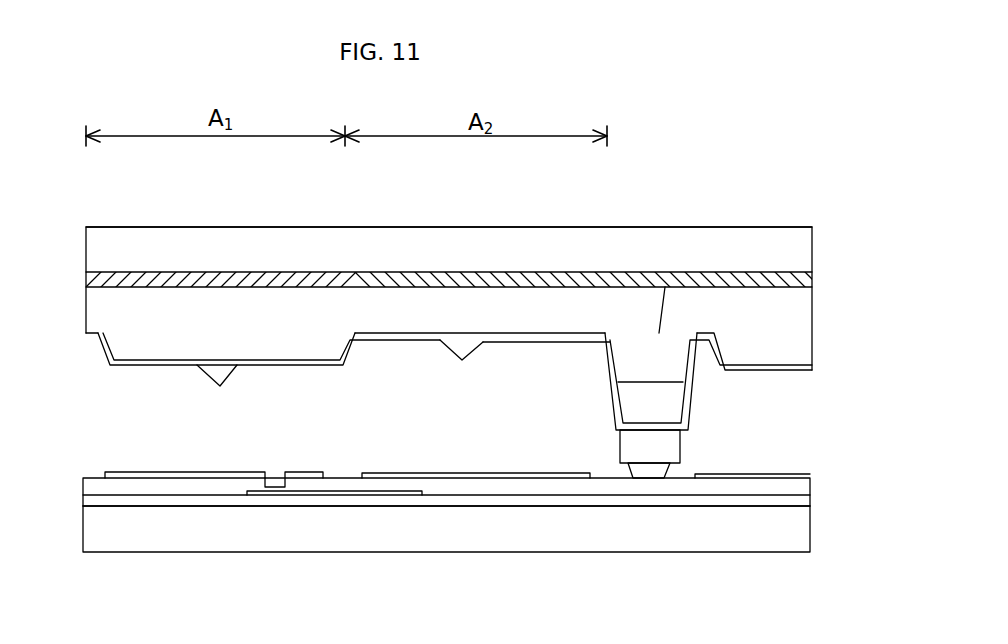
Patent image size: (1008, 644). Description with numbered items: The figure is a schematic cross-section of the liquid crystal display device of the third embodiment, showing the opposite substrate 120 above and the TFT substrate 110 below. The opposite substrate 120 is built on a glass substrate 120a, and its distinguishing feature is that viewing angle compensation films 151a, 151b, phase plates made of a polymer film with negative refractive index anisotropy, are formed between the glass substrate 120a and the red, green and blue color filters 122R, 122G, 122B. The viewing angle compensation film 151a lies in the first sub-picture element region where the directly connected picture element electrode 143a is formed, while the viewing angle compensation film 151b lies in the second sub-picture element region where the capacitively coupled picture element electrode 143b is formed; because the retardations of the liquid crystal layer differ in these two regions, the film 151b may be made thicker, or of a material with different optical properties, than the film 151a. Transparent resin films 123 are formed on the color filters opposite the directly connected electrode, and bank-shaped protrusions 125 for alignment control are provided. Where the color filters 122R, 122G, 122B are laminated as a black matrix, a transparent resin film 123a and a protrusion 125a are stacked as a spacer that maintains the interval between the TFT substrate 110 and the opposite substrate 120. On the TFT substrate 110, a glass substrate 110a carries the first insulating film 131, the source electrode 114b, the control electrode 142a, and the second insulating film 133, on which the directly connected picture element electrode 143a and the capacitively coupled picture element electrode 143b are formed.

The opposite substrate 120 is at (86, 226).
The glass substrate 120a is at (702, 240).
The viewing angle compensation film 151a is at (272, 283).
The viewing angle compensation film 151b is at (535, 285).
The red color filter 122R is at (395, 323).
The blue color filter 122B is at (797, 312).
The green color filter 122G is at (672, 410).
The transparent resin film 123 is at (147, 348).
The transparent resin film 123a is at (672, 440).
The bank-shaped protrusion 125 is at (220, 386).
The protrusion 125a is at (652, 473).
The TFT substrate 110 is at (83, 477).
The glass substrate 110a is at (758, 547).
The second insulating film 133 is at (797, 493).
The first insulating film 131 is at (797, 508).
The source electrode 114b is at (292, 492).
The control electrode 142a is at (403, 494).
The directly connected picture element electrode 143a is at (175, 473).
The capacitively coupled picture element electrode 143b is at (533, 475).